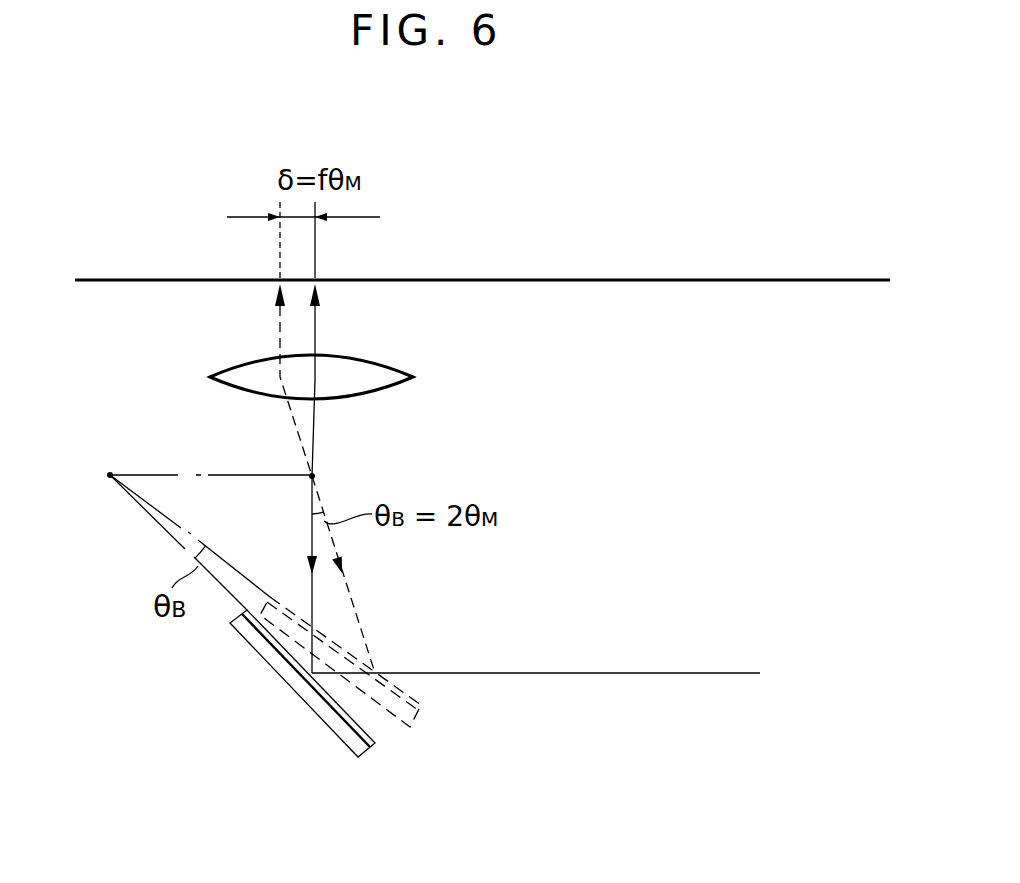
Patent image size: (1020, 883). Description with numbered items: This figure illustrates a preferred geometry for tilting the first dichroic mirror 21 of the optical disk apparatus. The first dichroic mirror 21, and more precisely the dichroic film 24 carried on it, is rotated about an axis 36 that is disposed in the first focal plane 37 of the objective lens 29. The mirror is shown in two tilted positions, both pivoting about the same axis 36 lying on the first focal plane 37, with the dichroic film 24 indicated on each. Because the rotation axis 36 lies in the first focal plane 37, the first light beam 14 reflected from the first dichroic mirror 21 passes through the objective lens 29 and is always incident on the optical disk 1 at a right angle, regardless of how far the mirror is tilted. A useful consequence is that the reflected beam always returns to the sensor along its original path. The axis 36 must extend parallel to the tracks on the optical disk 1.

The optical disk 1 is at (570, 278).
The objective lens 29 is at (413, 377).
The axis 36 is at (110, 472).
The first focal plane 37 is at (175, 472).
The first light beam 14 is at (650, 671).
The first dichroic mirror 21 is at (364, 753).
The dichroic film 24 is at (372, 737).